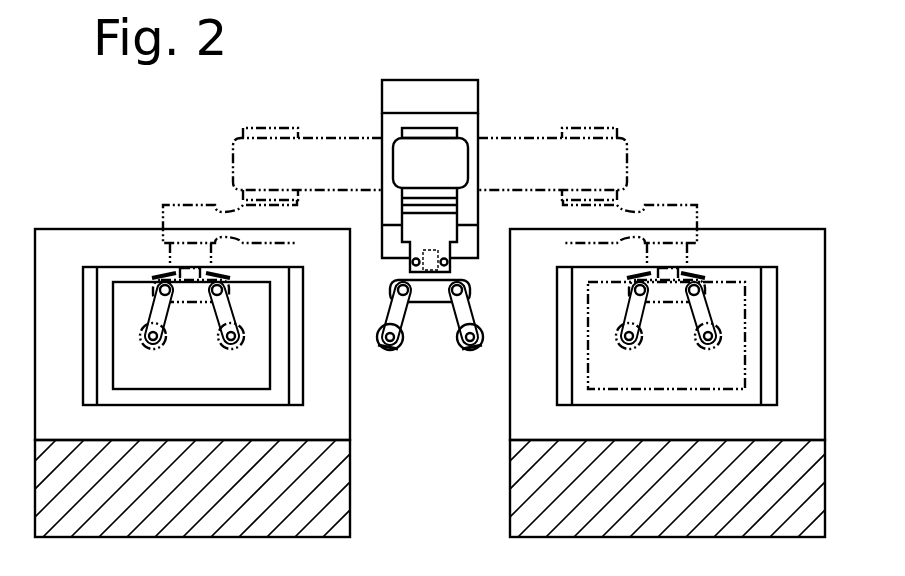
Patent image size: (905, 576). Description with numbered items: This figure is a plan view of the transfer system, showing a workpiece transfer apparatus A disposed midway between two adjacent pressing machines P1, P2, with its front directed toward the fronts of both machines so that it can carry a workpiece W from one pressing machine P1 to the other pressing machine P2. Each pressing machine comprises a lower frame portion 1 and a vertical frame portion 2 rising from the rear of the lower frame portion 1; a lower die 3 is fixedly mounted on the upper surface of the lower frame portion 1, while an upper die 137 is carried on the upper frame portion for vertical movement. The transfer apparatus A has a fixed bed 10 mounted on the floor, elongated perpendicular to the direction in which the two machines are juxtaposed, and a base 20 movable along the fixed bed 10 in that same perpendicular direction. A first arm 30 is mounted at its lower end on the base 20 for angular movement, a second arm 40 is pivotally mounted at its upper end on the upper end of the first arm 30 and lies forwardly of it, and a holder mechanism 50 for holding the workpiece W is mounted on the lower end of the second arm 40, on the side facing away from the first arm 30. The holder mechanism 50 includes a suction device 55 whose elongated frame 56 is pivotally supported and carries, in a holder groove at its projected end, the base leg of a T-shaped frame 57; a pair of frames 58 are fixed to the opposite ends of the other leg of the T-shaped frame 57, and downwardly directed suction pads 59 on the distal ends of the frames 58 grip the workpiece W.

The lower frame portion 1 is at (44, 252).
The vertical frame portion 2 is at (352, 521).
The lower die 3 is at (108, 276).
The upper die 137 is at (108, 407).
The workpiece W is at (134, 280).
The pressing machine P1 is at (52, 222).
The pressing machine P2 is at (808, 222).
The workpiece transfer apparatus A is at (482, 76).
The fixed bed 10 is at (424, 79).
The base 20 is at (382, 125).
The first arm 30 is at (469, 160).
The second arm 40 is at (458, 219).
The holder mechanism 50 is at (426, 376).
The suction device 55 is at (406, 362).
The elongated frame 56 is at (411, 256).
The T-shaped frame 57 is at (452, 264).
The frames 58 is at (412, 316).
The suction pads 59 is at (381, 351).